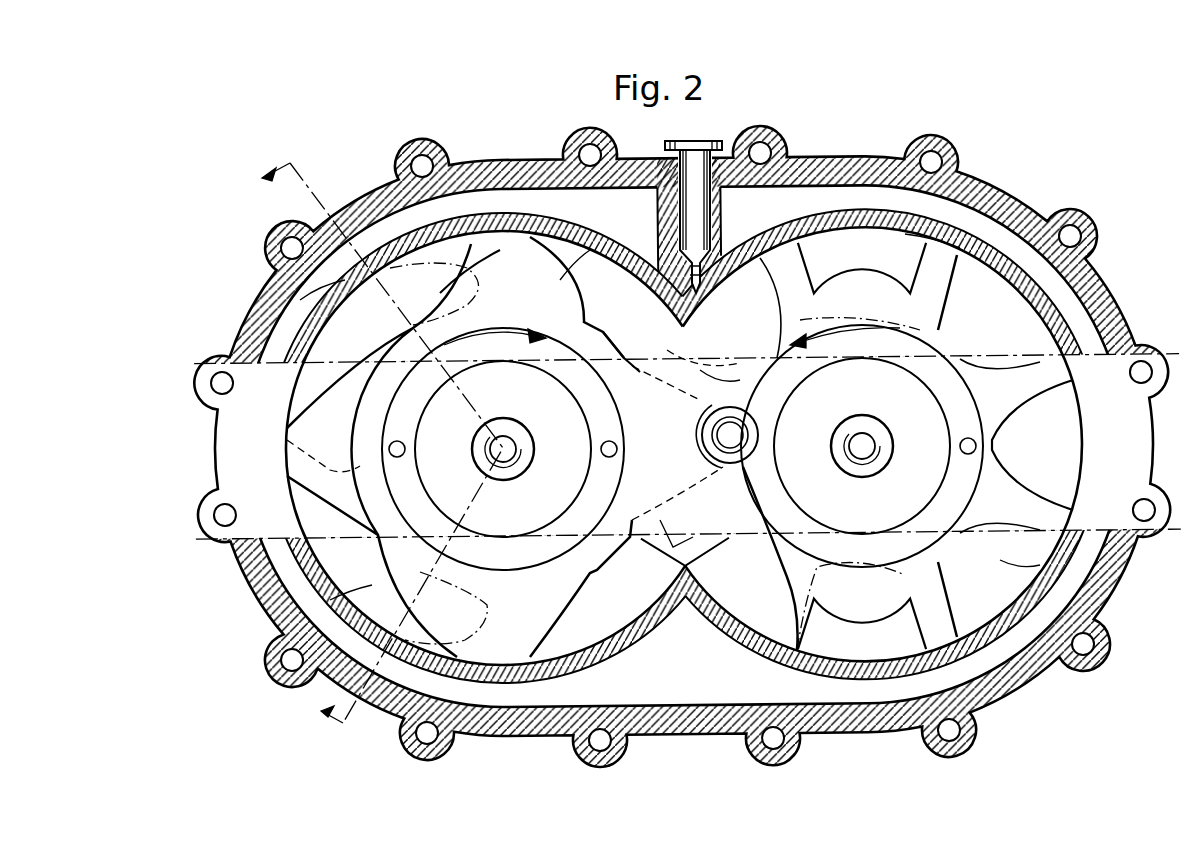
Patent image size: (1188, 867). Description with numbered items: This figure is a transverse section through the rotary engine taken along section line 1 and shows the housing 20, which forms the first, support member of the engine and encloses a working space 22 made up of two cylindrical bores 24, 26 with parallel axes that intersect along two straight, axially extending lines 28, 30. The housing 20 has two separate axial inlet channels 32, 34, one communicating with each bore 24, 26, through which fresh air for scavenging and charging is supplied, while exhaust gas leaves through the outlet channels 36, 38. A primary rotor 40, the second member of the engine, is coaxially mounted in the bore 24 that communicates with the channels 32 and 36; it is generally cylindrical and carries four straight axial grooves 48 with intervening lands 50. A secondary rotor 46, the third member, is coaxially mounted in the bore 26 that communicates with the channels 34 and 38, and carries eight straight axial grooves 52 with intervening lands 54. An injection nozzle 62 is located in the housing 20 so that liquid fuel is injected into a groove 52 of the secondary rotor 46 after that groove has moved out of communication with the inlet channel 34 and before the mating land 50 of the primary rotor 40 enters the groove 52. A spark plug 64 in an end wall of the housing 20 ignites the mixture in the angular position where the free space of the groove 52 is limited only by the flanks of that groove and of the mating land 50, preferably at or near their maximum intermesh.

The section line 1- 1 is at (372, 443).
The housing 20 is at (805, 176).
The working space 22 is at (760, 240).
The cylindrical bore 24 is at (556, 250).
The cylindrical bore 26 is at (843, 243).
The straight axially extending line 28 is at (634, 352).
The straight axially extending line 30 is at (681, 576).
The inlet channel 32 is at (350, 327).
The inlet channel 34 is at (874, 252).
The outlet channel 36 is at (340, 578).
The outlet channel 38 is at (1018, 575).
The primary rotor 40 is at (593, 350).
The secondary rotor 46 is at (848, 338).
The groove 48 is at (613, 311).
The land 50 is at (440, 293).
The groove 52 is at (727, 355).
The land 54 is at (790, 300).
The injection nozzle 62 is at (688, 200).
The spark plug 64 is at (716, 437).